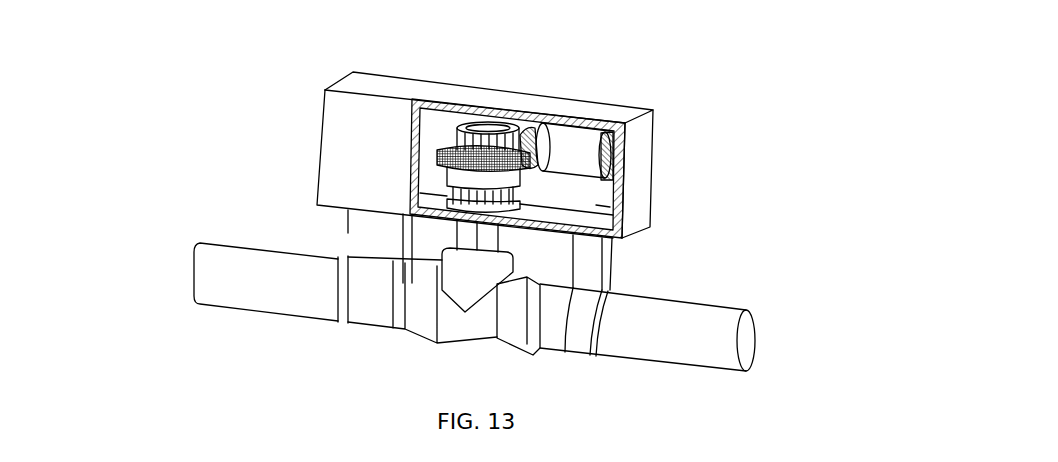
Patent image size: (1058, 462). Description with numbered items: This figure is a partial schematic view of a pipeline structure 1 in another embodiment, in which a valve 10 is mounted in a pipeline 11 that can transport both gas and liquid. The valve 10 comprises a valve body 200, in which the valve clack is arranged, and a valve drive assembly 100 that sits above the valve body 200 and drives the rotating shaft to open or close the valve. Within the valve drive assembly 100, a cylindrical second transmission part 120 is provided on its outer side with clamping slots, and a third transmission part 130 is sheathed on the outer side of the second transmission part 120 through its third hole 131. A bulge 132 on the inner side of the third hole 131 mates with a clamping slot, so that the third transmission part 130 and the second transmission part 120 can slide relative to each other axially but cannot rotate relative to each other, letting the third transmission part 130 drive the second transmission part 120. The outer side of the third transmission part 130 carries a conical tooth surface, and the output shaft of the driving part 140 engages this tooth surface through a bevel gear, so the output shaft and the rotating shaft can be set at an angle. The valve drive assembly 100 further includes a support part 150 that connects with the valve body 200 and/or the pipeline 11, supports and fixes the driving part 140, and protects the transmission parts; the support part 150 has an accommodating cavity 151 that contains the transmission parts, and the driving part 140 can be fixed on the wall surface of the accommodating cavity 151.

The pipeline structure 1 is at (511, 48).
The valve 10 is at (222, 133).
The pipeline 11 is at (697, 323).
The valve drive assembly 100 is at (301, 149).
The second transmission part 120 is at (497, 137).
The third transmission part 130 is at (447, 146).
The third hole 131 is at (447, 142).
The bulge 132 is at (447, 150).
The driving part 140 is at (583, 153).
The support part 150 is at (613, 262).
The accommodating cavity 151 is at (605, 214).
The valve body 200 is at (463, 310).